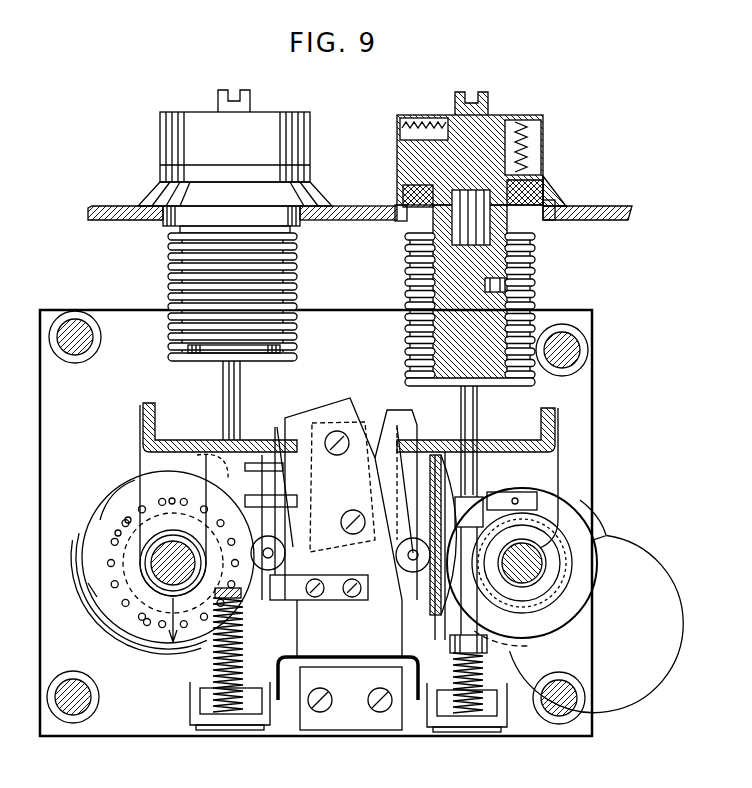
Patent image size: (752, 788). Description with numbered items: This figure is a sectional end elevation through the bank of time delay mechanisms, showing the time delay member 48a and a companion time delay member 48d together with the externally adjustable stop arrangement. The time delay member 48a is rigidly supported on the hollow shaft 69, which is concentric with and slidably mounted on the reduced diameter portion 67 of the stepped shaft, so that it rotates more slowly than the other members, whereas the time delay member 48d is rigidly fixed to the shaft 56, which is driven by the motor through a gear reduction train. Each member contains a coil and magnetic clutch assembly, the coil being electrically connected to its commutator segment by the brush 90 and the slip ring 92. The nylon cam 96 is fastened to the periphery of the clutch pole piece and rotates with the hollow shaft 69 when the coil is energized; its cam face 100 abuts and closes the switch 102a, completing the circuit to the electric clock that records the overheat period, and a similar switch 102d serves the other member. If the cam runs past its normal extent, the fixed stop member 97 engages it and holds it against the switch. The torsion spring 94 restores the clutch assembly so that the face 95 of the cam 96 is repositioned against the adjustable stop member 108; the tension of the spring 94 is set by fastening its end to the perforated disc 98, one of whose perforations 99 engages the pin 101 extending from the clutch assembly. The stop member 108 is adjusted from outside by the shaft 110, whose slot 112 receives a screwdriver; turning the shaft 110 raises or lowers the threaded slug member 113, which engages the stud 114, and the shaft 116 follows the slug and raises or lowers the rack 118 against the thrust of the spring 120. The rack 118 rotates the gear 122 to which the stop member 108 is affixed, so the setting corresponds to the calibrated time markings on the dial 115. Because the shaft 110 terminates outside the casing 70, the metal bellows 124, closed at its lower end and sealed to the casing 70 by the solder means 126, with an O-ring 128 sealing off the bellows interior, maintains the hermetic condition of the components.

The slot 112 is at (235, 92).
The shaft 110 is at (246, 111).
The dial 115 is at (168, 192).
The casing 70 is at (110, 208).
The metal bellows 124 is at (170, 272).
The O-ring 128 is at (408, 198).
The solder means 126 is at (398, 212).
The threaded slug member 113 is at (548, 200).
The stud 114 is at (510, 288).
The shaft 116 is at (222, 392).
The rack 118 is at (200, 440).
The brush 90 is at (250, 468).
The switch 102d is at (330, 410).
The switch 102a is at (375, 415).
The torsion spring 94 is at (141, 450).
The cam face 100 is at (135, 490).
The pin 101 is at (170, 502).
The perforations 99 is at (127, 520).
The perforated disc 98 is at (118, 533).
The nylon cam 96 is at (90, 558).
The face 95 is at (92, 590).
The shaft 56 is at (160, 575).
The adjustable stop member 108 is at (125, 640).
The time delay member 48d is at (167, 660).
The fixed stop member 97 is at (305, 600).
The spring 120 is at (240, 678).
The slip ring 92 is at (560, 497).
The time delay member 48a is at (623, 514).
The hollow shaft 69 is at (545, 560).
The reduced diameter portion 67 is at (540, 572).
The gear 122 is at (570, 610).